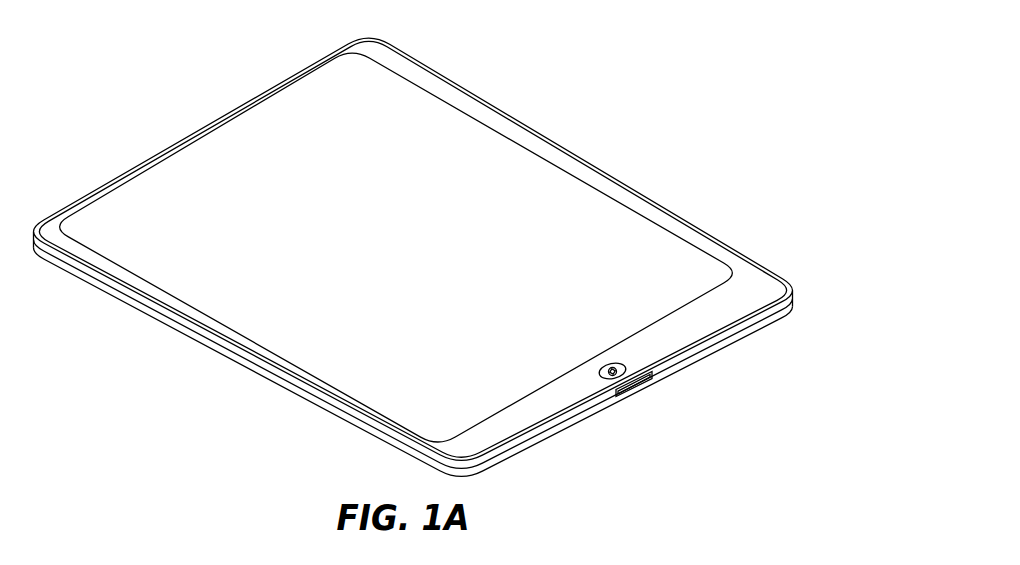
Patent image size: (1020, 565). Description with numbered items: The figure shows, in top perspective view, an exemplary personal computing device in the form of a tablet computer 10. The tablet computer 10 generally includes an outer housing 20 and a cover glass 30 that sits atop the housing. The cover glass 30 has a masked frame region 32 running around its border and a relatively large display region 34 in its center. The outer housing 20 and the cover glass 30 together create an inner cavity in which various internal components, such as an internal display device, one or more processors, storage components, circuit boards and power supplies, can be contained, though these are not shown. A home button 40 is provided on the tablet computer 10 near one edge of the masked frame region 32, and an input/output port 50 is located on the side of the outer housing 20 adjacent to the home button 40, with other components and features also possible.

The tablet computer 10 is at (608, 77).
The outer housing 20 is at (133, 302).
The cover glass 30 is at (330, 392).
The masked frame region 32 is at (476, 448).
The display region 34 is at (341, 210).
The home button 40 is at (606, 372).
The input/output port 50 is at (648, 390).